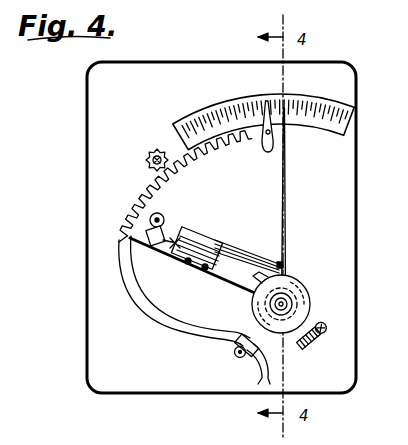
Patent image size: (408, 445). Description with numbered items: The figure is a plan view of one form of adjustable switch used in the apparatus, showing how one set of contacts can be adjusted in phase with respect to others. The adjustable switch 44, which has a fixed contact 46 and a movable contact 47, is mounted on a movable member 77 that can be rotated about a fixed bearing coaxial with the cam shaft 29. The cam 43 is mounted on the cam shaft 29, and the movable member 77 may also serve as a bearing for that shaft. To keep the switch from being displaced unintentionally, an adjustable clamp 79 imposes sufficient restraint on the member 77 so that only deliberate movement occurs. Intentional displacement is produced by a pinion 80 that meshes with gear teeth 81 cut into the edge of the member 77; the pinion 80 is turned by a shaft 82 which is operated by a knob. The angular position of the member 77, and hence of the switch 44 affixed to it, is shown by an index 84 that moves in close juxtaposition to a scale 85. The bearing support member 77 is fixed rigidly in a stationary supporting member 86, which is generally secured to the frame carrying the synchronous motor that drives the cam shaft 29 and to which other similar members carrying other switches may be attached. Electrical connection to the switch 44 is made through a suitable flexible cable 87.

The cam shaft 29 is at (287, 302).
The cam 43 is at (293, 284).
The adjustable switch 44 is at (245, 226).
The fixed contact 46 is at (249, 255).
The movable contact 47 is at (249, 261).
The movable member 77 is at (278, 188).
The adjustable clamp 79 is at (322, 338).
The pinion 80 is at (146, 167).
The gear teeth 81 is at (176, 148).
The shaft 82 is at (143, 158).
The index 84 is at (266, 102).
The scale 85 is at (231, 103).
The stationary supporting member 86 is at (87, 217).
The flexible cable 87 is at (178, 333).